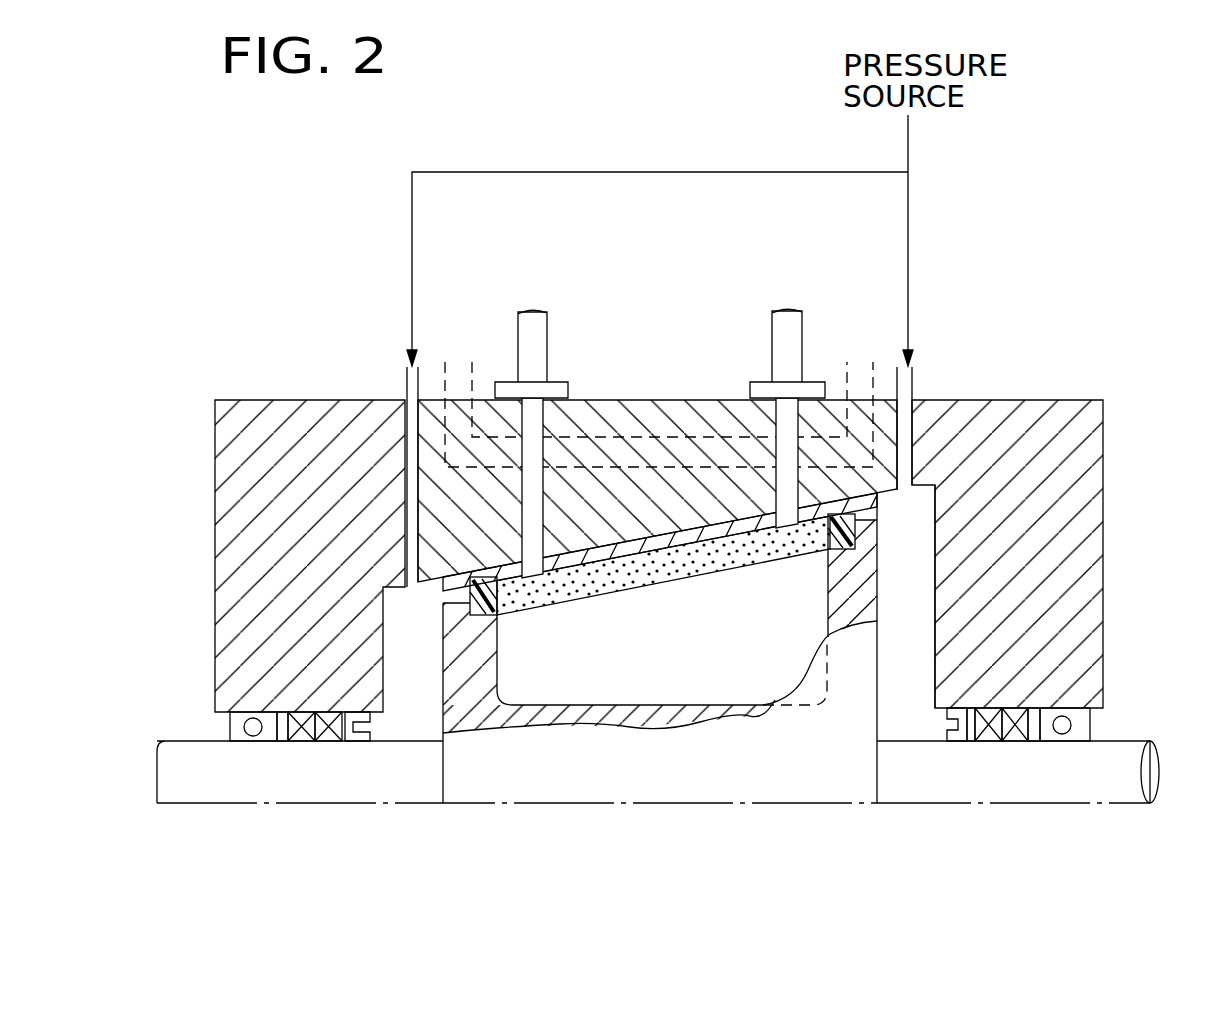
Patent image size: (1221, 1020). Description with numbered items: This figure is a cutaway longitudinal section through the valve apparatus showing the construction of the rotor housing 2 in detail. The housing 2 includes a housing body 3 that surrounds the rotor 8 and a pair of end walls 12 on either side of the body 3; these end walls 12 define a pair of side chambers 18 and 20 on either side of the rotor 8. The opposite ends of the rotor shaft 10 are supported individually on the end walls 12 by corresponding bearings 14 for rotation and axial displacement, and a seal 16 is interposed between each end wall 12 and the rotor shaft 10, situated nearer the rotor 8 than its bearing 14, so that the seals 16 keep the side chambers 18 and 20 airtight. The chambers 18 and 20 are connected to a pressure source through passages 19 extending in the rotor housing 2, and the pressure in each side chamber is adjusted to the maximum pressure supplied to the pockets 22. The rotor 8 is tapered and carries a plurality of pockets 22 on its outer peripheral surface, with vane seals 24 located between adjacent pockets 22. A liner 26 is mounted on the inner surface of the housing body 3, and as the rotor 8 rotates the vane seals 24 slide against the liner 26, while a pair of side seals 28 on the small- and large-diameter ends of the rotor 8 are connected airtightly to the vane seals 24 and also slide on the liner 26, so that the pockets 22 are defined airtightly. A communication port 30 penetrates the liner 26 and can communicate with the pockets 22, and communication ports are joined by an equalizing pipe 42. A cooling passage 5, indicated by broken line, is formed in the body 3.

The rotor housing 2 is at (982, 281).
The housing body 3 is at (638, 398).
The cooling passage 5 is at (694, 437).
The rotor 8 is at (878, 665).
The rotor shaft 10 is at (1125, 745).
The end walls 12 is at (297, 398).
The bearings 14 is at (233, 727).
The seal 16 is at (328, 745).
The side chamber 18 is at (407, 730).
The pressure pipe 19 is at (405, 405).
The side chamber 20 is at (918, 588).
The pockets 22 is at (641, 667).
The vane seals 24 is at (765, 566).
The liner 26 is at (445, 588).
The side seals 28 is at (470, 608).
The communication port 30 is at (540, 422).
The equalizing pipe 42 is at (518, 345).